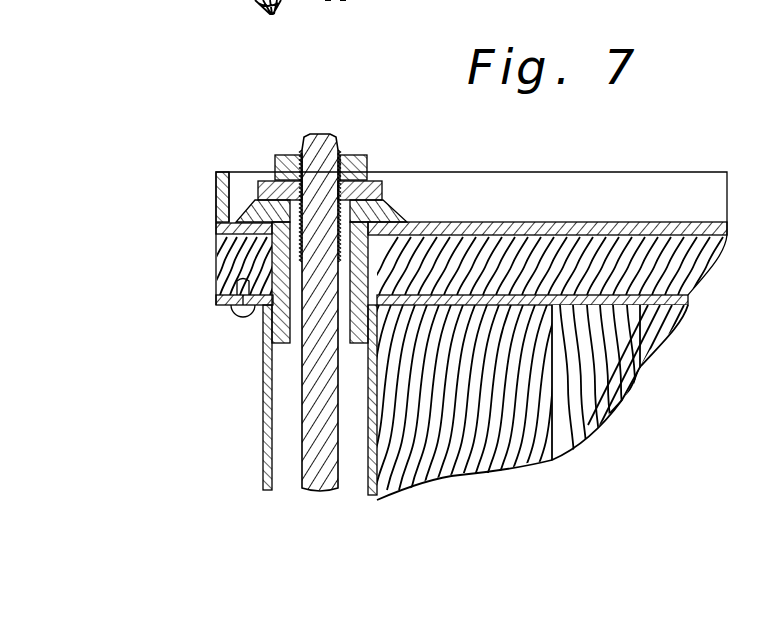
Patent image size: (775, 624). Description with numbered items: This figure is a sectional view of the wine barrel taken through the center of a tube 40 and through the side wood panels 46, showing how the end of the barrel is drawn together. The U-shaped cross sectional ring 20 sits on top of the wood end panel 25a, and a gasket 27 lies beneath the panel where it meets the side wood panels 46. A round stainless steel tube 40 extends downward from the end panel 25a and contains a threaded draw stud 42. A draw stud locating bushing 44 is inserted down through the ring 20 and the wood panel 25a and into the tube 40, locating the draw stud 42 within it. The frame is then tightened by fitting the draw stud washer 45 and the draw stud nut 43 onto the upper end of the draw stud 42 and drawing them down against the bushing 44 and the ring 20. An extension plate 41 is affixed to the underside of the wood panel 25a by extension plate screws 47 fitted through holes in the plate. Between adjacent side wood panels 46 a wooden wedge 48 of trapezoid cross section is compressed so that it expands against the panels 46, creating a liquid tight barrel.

The U-shaped cross sectional ring 20 is at (237, 188).
The wood end panel 25a is at (694, 262).
The gasket 27 is at (688, 300).
The tube 40 is at (266, 368).
The extension plate 41 is at (222, 302).
The threaded draw stud 42 is at (316, 133).
The draw stud nut 43 is at (354, 153).
The draw stud locating bushing 44 is at (404, 216).
The draw stud washer 45 is at (272, 170).
The wood panel 46 is at (660, 335).
The extension plate screw 47 is at (244, 316).
The wooden wedge 48 is at (632, 392).